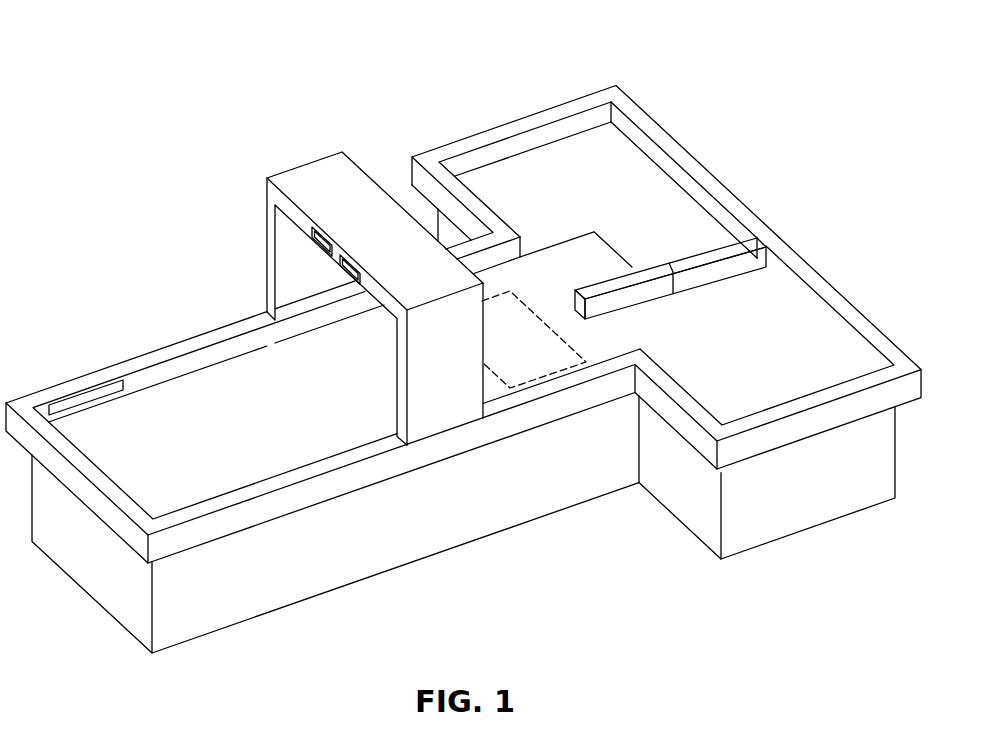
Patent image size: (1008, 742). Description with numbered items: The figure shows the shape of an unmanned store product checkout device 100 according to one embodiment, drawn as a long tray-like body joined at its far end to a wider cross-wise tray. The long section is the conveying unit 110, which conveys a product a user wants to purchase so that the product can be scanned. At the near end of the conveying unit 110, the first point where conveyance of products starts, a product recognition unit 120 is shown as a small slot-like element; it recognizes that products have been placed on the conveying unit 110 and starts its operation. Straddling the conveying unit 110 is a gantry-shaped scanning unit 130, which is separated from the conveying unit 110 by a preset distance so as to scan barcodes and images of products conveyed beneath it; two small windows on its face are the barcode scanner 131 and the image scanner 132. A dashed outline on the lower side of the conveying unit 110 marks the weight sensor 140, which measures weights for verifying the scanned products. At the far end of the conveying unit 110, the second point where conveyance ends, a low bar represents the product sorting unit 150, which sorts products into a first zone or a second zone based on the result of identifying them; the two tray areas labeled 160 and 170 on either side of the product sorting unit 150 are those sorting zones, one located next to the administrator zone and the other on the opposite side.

The unmanned store product checkout device 100 is at (170, 221).
The conveying unit 110 is at (174, 428).
The product recognition unit 120 is at (83, 387).
The scanning unit 130 is at (300, 166).
The barcode scanner 131 is at (321, 224).
The image scanner 132 is at (349, 252).
The weight sensor 140 is at (538, 306).
The product sorting unit 150 is at (601, 285).
The front tray 160 is at (790, 338).
The rear tray 170 is at (627, 186).